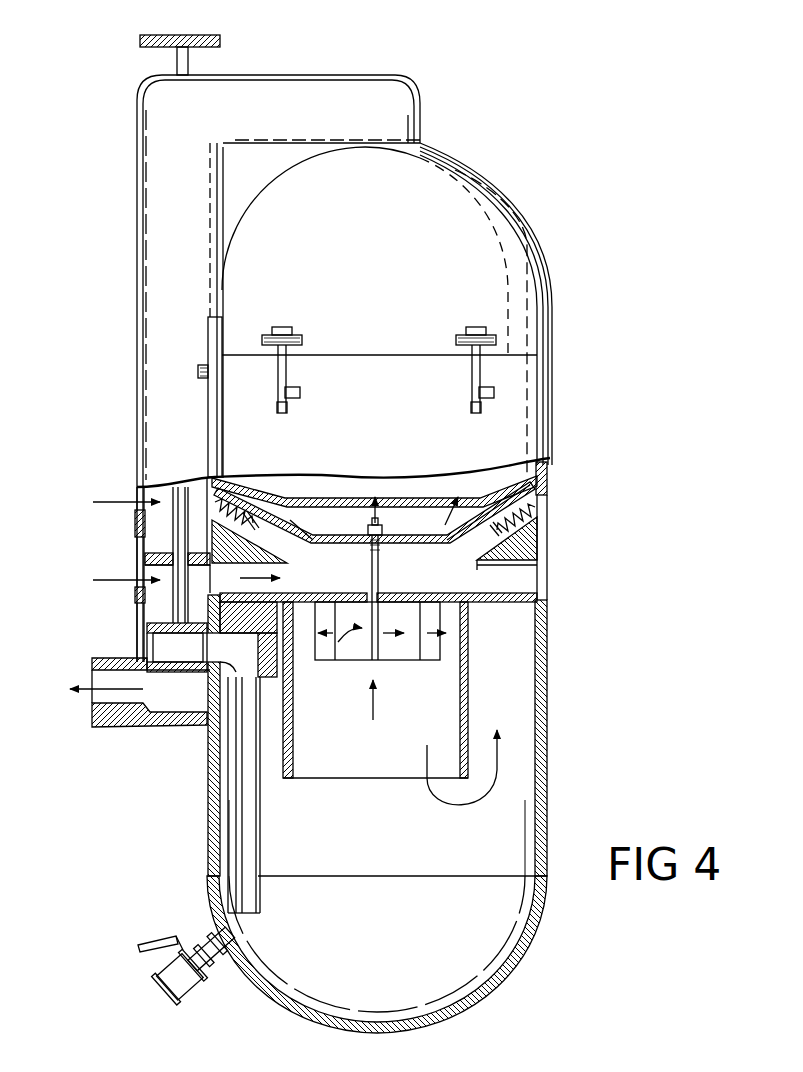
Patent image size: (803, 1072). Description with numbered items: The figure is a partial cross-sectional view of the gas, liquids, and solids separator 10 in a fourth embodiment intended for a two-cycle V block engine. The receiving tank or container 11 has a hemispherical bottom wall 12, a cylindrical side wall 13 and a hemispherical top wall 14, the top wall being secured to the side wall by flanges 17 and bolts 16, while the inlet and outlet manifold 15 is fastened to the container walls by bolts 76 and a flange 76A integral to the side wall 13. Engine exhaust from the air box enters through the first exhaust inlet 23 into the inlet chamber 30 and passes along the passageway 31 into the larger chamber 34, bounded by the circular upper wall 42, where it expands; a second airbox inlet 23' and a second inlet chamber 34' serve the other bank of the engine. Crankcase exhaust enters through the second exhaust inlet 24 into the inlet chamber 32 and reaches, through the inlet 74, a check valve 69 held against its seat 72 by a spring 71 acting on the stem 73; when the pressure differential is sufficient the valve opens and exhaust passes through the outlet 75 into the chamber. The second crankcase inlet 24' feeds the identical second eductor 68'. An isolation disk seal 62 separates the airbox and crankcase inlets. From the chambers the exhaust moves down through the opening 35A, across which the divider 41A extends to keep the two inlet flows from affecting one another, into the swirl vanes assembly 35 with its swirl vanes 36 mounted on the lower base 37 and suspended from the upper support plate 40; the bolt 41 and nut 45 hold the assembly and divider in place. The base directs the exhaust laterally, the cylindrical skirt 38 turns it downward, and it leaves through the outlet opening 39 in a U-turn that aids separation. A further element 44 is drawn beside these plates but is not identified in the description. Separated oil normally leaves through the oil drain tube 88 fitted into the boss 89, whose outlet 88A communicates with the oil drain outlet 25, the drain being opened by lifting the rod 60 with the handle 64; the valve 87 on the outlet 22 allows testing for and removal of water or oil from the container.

The gas, liquids, and solids separator 10 is at (596, 144).
The receiving tank or container 11 is at (517, 194).
The hemispherical bottom wall 12 is at (465, 1003).
The cylindrical side wall 13 is at (543, 656).
The hemispherical top wall 14 is at (543, 301).
The inlet and outlet manifold 15 is at (118, 377).
The bolts 16 is at (470, 378).
The flanges 17 is at (460, 340).
The outlet 22 is at (232, 957).
The first exhaust inlet 23 is at (126, 597).
The airbox inlet 23' is at (412, 583).
The second exhaust inlet 24 is at (126, 518).
The crankcase inlet 24' is at (570, 531).
The oil drain outlet 25 is at (95, 705).
The inlet chamber 30 is at (147, 630).
The passageway 31 is at (227, 597).
The inlet chamber 32 is at (147, 530).
The chamber 34 is at (355, 571).
The inlet chamber 34' is at (466, 578).
The swirl vanes assembly 35 is at (373, 710).
The opening 35A is at (402, 618).
The swirl vanes 36 is at (350, 660).
The lower base 37 is at (407, 660).
The cylindrical skirt 38 is at (468, 692).
The outlet opening 39 is at (350, 778).
The upper support plate 40 is at (478, 603).
The bolt 41 is at (378, 523).
The divider 41A is at (380, 580).
The circular upper wall 42 is at (432, 547).
The lower plate 44 is at (300, 553).
The nut 45 is at (383, 530).
The rod 60 is at (175, 590).
The isolation disk seal 62 is at (143, 558).
The handle 64 is at (220, 42).
The eductor 68' is at (541, 534).
The check valve 69 is at (253, 520).
The spring 71 is at (213, 510).
The seat 72 is at (273, 484).
The stem 73 is at (210, 497).
The inlet 74 is at (212, 478).
The outlet 75 is at (300, 545).
The bolts 76 is at (200, 372).
The flange 76A is at (215, 407).
The valve 87 is at (192, 995).
The oil drain tube 88 is at (260, 828).
The outlet 88A is at (213, 645).
The boss 89 is at (270, 697).